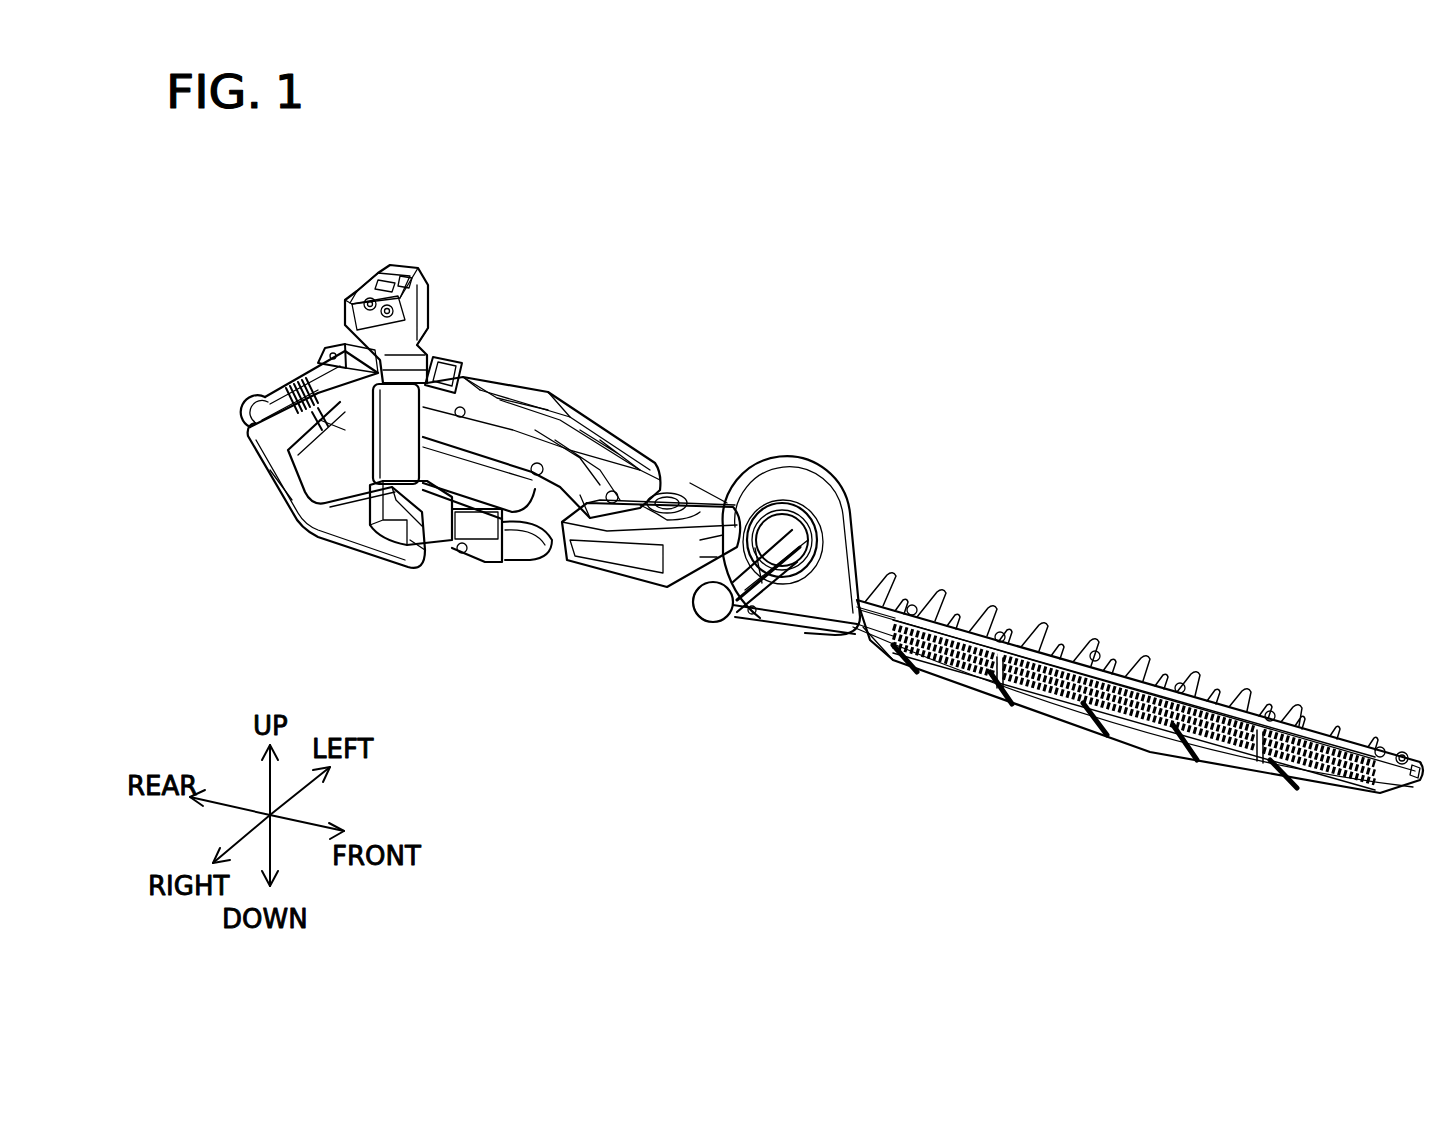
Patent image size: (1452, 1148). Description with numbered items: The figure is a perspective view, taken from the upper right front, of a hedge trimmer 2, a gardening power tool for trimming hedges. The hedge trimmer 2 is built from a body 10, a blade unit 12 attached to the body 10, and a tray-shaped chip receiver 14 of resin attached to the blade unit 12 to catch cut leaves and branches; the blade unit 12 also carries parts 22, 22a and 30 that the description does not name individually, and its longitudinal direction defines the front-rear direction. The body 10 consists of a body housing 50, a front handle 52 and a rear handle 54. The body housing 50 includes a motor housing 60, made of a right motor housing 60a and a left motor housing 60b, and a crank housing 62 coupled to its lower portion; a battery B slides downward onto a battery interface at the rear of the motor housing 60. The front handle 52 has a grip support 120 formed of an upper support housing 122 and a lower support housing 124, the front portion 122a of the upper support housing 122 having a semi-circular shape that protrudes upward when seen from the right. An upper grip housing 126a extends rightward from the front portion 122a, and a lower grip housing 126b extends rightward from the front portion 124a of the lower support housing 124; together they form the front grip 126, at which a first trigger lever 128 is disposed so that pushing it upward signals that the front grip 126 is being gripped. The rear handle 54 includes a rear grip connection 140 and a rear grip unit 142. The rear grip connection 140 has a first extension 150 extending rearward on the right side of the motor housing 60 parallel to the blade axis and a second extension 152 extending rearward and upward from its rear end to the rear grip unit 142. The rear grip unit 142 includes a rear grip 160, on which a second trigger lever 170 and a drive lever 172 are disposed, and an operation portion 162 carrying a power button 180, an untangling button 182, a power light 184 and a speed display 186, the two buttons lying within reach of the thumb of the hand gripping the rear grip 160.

The hedge trimmer 2 is at (1148, 333).
The body 10 is at (790, 327).
The blade unit 12 is at (1261, 618).
The chip receiver 14 is at (1133, 735).
The blade 22 is at (1341, 682).
The blade tip end 22a is at (1372, 740).
The blade cover 30 is at (1270, 693).
The body housing 50 is at (647, 326).
The front handle 52 is at (894, 466).
The rear handle 54 is at (412, 598).
The motor housing 60 is at (622, 416).
The right motor housing 60a is at (497, 398).
The left motor housing 60b is at (520, 393).
The crank housing 62 is at (527, 594).
The battery B is at (443, 346).
The grip support 120 is at (998, 495).
The upper support housing 122 is at (830, 517).
The front portion of the upper support housing 122a is at (777, 488).
The lower support housing 124 is at (847, 573).
The front portion of the lower support housing 124a is at (807, 627).
The front grip 126 is at (727, 713).
The upper grip housing 126a is at (705, 593).
The lower grip housing 126b is at (710, 612).
The first trigger lever 128 is at (750, 610).
The rear grip connection 140 is at (353, 592).
The rear grip unit 142 is at (258, 332).
The first extension 150 is at (365, 535).
The second extension 152 is at (288, 483).
The rear grip 160 is at (300, 393).
The operation portion 162 is at (410, 228).
The second trigger lever 170 is at (330, 352).
The drive lever 172 is at (338, 435).
The power button 180 is at (370, 278).
The untangling button 182 is at (430, 283).
The power light 184 is at (410, 273).
The speed display 186 is at (395, 270).